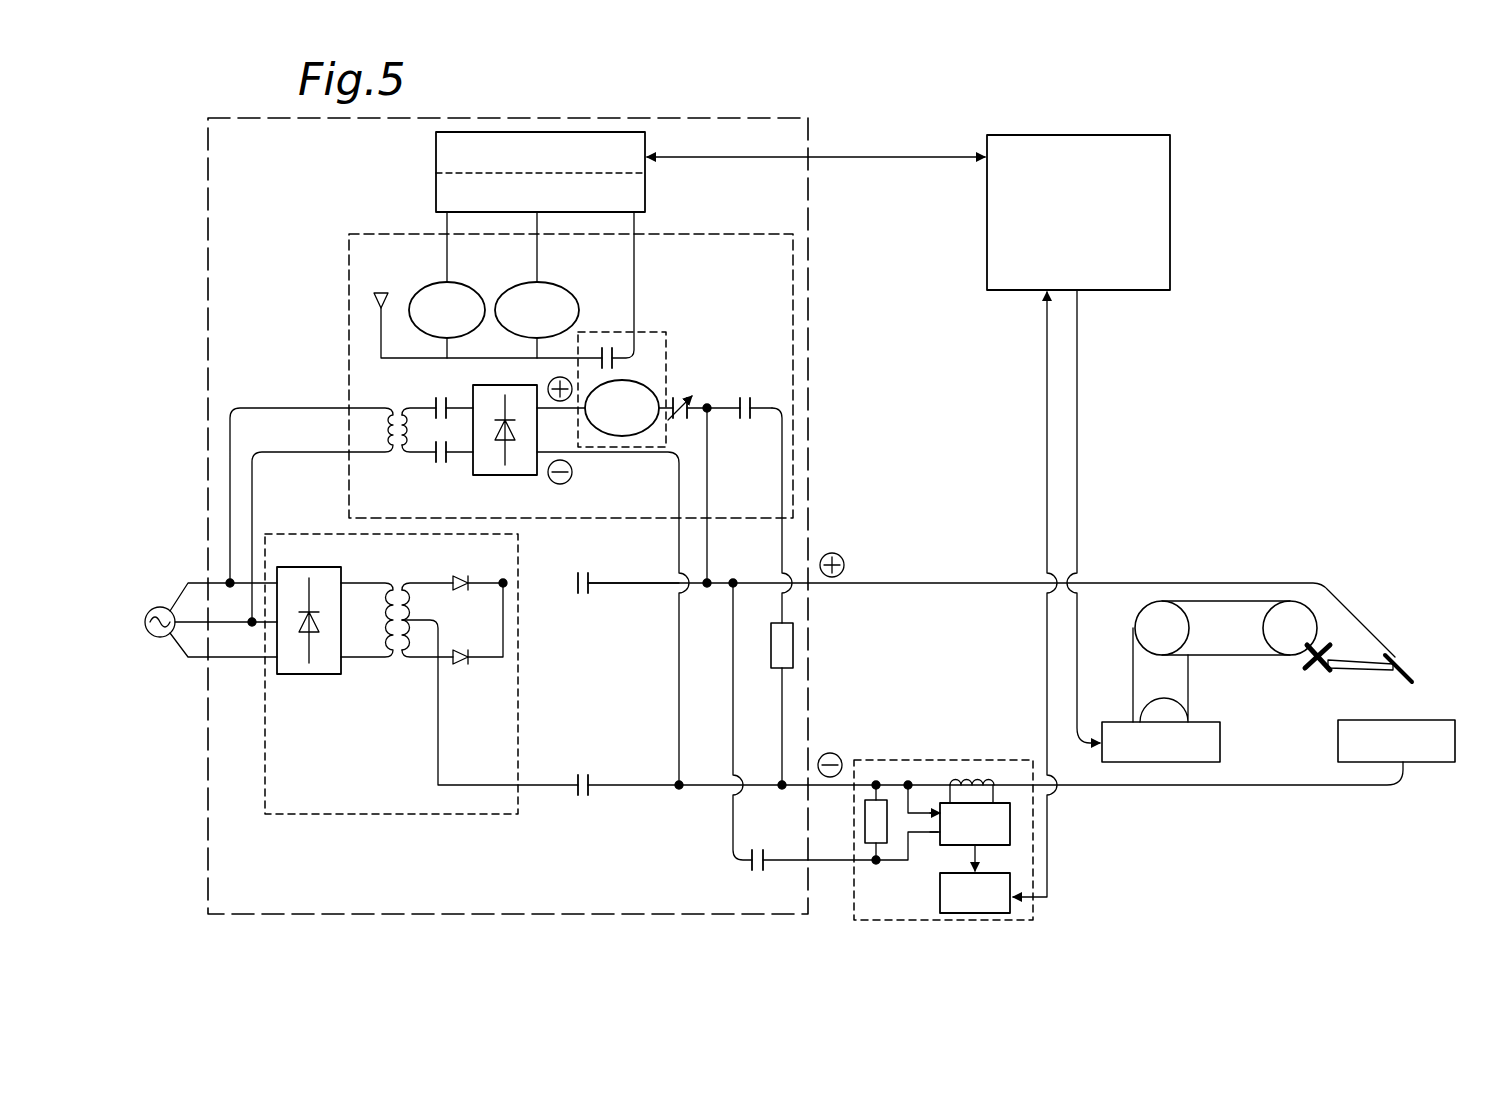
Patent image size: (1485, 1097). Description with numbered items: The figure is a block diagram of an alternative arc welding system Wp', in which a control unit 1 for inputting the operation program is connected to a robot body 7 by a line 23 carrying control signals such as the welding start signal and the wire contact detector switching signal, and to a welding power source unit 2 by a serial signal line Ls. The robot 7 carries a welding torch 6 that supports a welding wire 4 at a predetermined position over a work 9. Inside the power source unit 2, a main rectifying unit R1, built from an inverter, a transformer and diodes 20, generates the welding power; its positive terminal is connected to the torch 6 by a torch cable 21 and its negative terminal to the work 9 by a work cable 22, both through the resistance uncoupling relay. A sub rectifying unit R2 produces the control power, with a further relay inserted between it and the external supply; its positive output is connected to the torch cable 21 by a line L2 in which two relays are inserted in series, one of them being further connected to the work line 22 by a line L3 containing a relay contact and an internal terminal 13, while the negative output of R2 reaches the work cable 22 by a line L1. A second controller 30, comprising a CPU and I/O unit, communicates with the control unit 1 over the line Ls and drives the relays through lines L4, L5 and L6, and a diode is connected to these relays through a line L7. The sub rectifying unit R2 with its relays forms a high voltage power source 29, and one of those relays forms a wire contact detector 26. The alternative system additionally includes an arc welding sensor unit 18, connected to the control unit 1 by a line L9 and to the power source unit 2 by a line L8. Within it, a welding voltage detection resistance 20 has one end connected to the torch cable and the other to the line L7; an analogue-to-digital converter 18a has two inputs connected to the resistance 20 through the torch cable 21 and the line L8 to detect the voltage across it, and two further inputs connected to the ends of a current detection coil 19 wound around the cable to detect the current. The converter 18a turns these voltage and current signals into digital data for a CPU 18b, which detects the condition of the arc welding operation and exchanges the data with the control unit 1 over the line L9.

The control unit 1 is at (1170, 232).
The welding power source unit 2 is at (808, 318).
The welding wire 4 is at (1412, 682).
The welding torch 6 is at (1398, 657).
The robot body 7 is at (1250, 657).
The work 9 is at (1338, 742).
The internal terminal 13 is at (793, 645).
The arc welding sensor unit 18 is at (973, 811).
The analogue to digital (A/D) converter 18a is at (1010, 822).
The CPU 18b is at (938, 897).
The current detection coil 19 is at (978, 775).
The diodes / welding voltage detection resistance 20 is at (463, 578).
The torch cable 21 is at (905, 583).
The work cable 22 is at (1225, 787).
The line 23 is at (1077, 445).
The wire contact detector 26 is at (666, 335).
The high voltage power source 29 is at (740, 234).
The second controller 30 is at (647, 136).
The line L1 is at (679, 693).
The line L2 is at (707, 548).
The line L3 is at (784, 535).
The line L4 is at (447, 252).
The line L5 is at (537, 252).
The line L6 is at (634, 252).
The line L7 is at (381, 330).
The line L8 is at (832, 862).
The line L9 is at (1047, 880).
The serial signal line Ls is at (897, 157).
The main rectifying unit R1 is at (320, 534).
The sub rectifying unit R2 is at (495, 475).
The arc welding system Wp' is at (1264, 83).